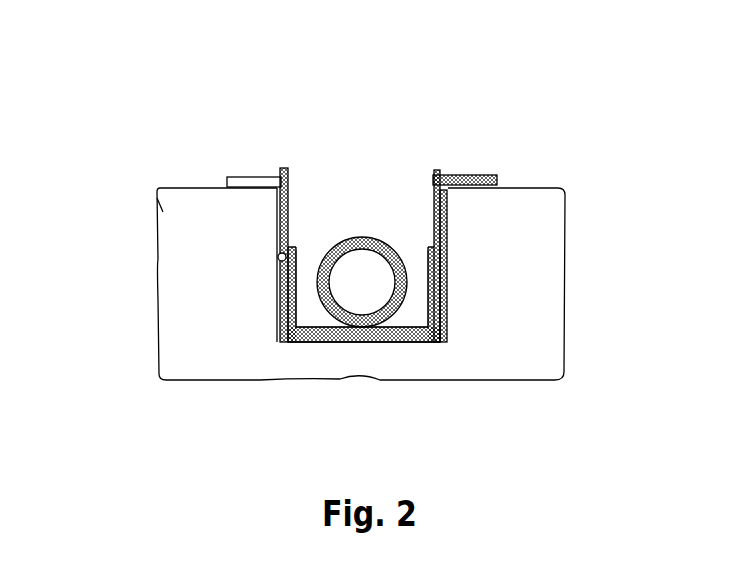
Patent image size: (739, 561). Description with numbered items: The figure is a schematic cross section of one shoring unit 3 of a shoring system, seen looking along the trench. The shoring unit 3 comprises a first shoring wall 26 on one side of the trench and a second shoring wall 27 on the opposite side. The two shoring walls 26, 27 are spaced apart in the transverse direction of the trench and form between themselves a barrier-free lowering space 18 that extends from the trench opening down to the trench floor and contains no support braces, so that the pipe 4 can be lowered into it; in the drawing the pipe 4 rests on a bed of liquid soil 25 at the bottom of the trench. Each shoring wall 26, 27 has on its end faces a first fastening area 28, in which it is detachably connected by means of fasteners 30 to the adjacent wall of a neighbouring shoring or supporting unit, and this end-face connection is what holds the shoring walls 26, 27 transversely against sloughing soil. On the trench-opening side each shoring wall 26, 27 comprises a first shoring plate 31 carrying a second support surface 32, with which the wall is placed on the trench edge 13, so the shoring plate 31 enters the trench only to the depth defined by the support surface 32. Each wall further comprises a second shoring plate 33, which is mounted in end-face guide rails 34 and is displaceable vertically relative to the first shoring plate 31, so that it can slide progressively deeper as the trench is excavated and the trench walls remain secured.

The shoring unit 3 is at (122, 97).
The pipe 4 is at (372, 297).
The trench edge 13 is at (215, 187).
The barrier-free lowering space 18 is at (378, 235).
The liquid soil 25 is at (373, 337).
The first shoring wall 26 is at (288, 178).
The second shoring wall 27 is at (433, 172).
The first fastening area 28 is at (286, 226).
The fastener 30 is at (280, 185).
The first shoring plate 31 is at (278, 212).
The second support surface 32 is at (467, 193).
The second shoring plate 33 is at (283, 303).
The guide rail 34 is at (282, 270).